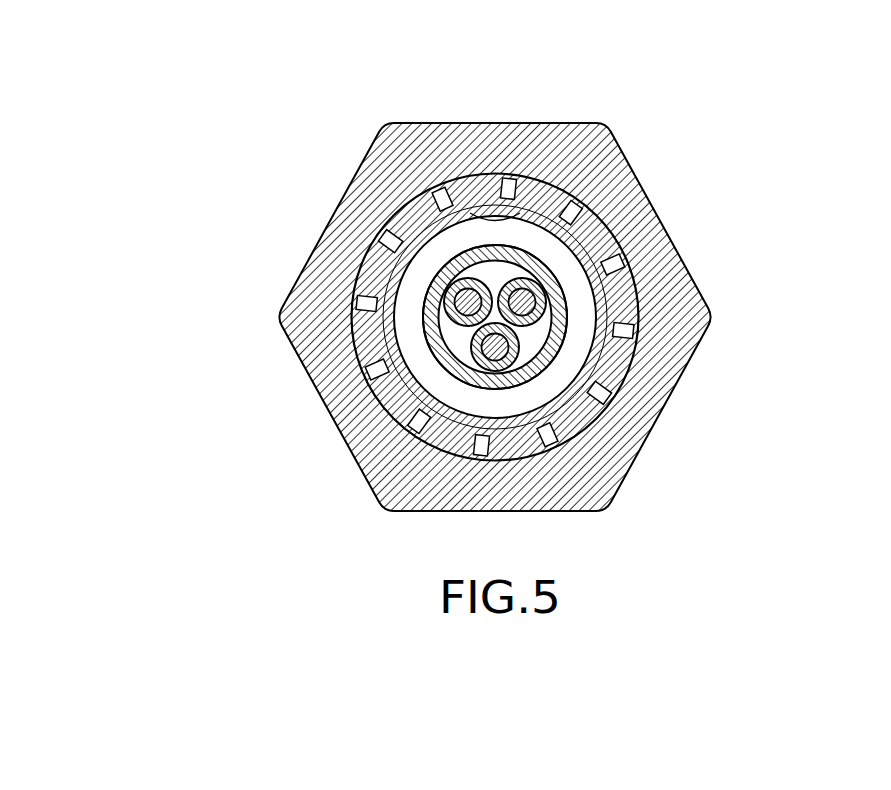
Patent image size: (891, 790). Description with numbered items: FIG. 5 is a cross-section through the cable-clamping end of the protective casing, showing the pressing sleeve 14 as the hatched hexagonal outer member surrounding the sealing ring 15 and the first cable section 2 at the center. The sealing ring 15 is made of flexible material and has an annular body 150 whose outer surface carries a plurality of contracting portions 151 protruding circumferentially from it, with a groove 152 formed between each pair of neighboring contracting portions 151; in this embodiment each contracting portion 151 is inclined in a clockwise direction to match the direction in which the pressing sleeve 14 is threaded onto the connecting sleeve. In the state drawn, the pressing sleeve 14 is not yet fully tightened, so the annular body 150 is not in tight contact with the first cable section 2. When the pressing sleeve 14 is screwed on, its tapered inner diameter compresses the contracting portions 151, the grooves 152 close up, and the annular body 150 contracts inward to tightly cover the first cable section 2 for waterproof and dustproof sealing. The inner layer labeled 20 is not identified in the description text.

The pressing sleeve 14 is at (680, 270).
The sealing ring 15 is at (390, 332).
The annular body 150 is at (527, 205).
The contracting portion 151 is at (395, 195).
The groove 152 is at (443, 185).
The insulating jacket 20 is at (545, 347).
The first cable section 2 is at (545, 303).